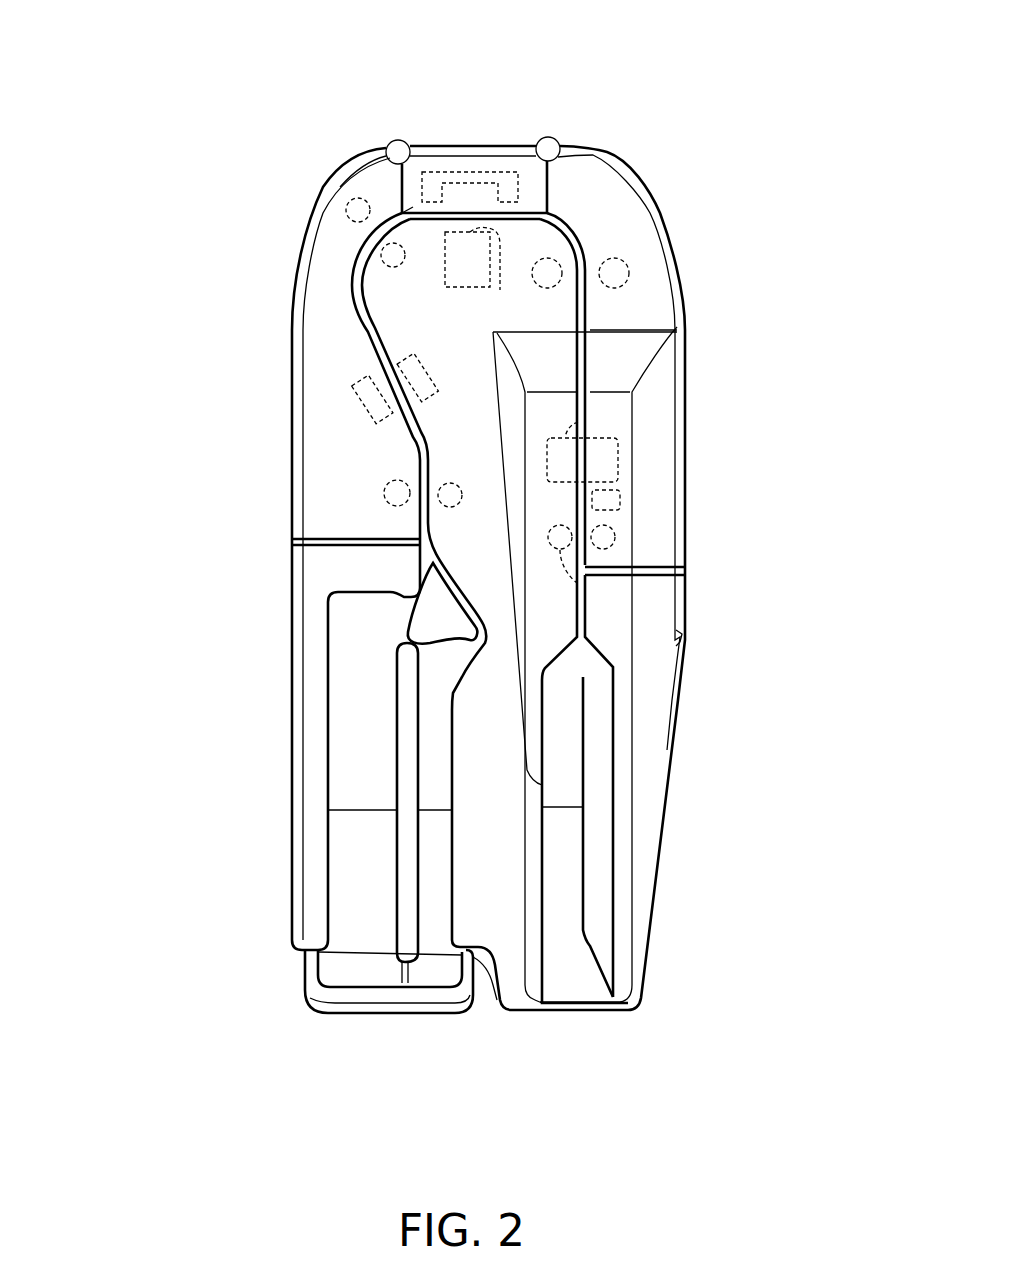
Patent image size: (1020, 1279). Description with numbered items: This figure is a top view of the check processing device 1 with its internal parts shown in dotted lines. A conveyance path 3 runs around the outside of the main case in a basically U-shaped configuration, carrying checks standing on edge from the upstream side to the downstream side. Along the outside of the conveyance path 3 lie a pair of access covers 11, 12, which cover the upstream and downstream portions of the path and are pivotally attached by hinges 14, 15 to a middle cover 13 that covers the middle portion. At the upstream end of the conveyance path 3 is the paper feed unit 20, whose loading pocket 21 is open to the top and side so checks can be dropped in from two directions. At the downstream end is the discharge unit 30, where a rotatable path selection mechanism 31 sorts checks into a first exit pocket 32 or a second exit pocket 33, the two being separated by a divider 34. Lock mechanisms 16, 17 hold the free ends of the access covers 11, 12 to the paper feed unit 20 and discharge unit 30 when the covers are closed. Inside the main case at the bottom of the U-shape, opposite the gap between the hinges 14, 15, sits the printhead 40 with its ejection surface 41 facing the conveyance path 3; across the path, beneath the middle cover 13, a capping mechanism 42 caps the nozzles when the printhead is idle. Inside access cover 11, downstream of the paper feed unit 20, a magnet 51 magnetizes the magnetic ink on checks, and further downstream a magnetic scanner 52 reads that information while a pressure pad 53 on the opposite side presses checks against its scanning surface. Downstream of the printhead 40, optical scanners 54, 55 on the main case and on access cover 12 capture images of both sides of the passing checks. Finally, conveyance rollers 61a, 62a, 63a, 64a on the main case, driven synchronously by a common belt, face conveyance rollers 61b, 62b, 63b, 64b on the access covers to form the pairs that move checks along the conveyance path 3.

The check processing device 1 is at (704, 202).
The conveyance path 3 is at (577, 242).
The access cover 11 is at (620, 187).
The access cover 12 is at (355, 185).
The middle cover 13 is at (505, 160).
The hinge 14 is at (552, 137).
The hinge 15 is at (400, 140).
The lock mechanism 16 is at (684, 639).
The lock mechanism 17 is at (292, 618).
The paper feed unit 20 is at (644, 783).
The loading pocket 21 is at (572, 883).
The discharge unit 30 is at (316, 813).
The path selection mechanism 31 is at (437, 618).
The first exit pocket 32 is at (353, 750).
The second exit pocket 33 is at (427, 877).
The divider 34 is at (402, 915).
The printhead 40 is at (413, 207).
The ejection surface 41 is at (482, 275).
The capping mechanism 42 is at (440, 172).
The magnet 51 is at (620, 498).
The magnetic scanner 52 is at (618, 452).
The pressure pad 53 is at (580, 421).
The optical scanner 54 is at (400, 362).
The optical scanner 55 is at (355, 405).
The conveyance roller 61a is at (577, 583).
The conveyance roller 61b is at (617, 537).
The conveyance roller 62a is at (560, 285).
The conveyance roller 62b is at (630, 268).
The conveyance roller 63a is at (381, 257).
The conveyance roller 63b is at (347, 208).
The conveyance roller 64a is at (440, 468).
The conveyance roller 64b is at (385, 497).